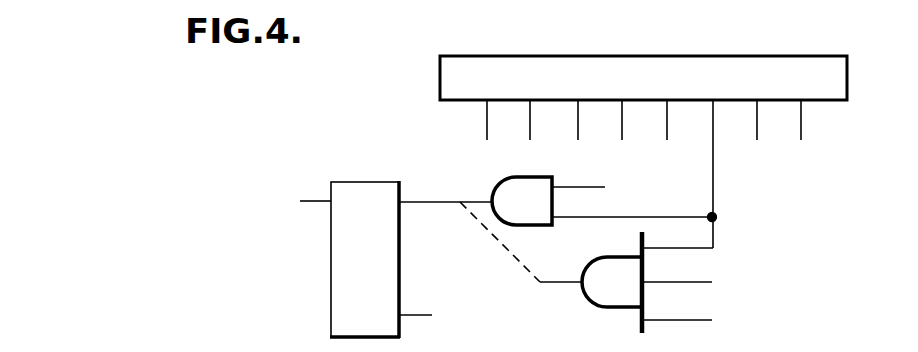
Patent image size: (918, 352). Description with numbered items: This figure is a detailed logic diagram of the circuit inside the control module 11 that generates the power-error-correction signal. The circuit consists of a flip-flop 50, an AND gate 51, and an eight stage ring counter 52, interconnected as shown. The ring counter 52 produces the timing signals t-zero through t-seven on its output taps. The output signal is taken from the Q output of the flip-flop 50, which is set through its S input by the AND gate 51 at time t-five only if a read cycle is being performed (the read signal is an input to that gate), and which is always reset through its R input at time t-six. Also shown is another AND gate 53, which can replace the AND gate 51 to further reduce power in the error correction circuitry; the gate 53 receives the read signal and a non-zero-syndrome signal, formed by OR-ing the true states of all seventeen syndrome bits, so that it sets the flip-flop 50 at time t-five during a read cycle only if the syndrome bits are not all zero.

The control module 11 is at (248, 291).
The flip-flop 50 is at (375, 278).
The AND gate 51 is at (537, 216).
The eight stage ring counter 52 is at (747, 93).
The AND gate 53 is at (629, 298).